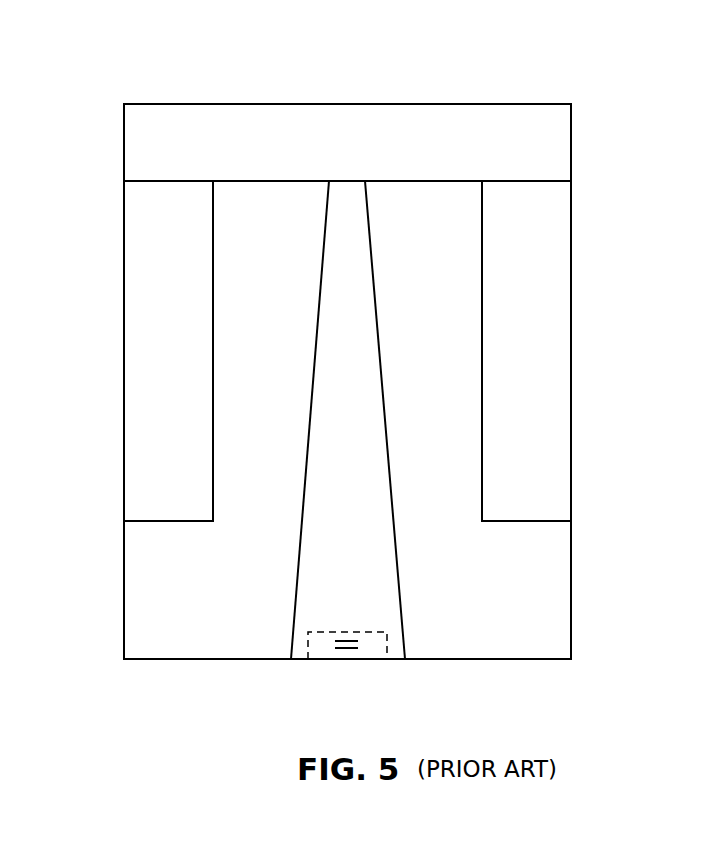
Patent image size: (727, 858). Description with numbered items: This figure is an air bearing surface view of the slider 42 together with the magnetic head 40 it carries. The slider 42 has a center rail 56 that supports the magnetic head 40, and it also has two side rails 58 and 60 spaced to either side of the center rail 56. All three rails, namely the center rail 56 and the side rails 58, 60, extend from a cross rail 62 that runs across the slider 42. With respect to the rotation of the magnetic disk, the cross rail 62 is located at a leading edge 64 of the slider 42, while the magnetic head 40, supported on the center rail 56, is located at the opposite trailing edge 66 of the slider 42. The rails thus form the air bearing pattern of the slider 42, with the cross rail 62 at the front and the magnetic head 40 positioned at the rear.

The magnetic head 40 is at (325, 660).
The slider 42 is at (124, 606).
The center rail 56 is at (330, 296).
The side rail 58 is at (141, 262).
The side rail 60 is at (553, 265).
The cross rail 62 is at (268, 117).
The leading edge 64 is at (447, 104).
The trailing edge 66 is at (470, 660).